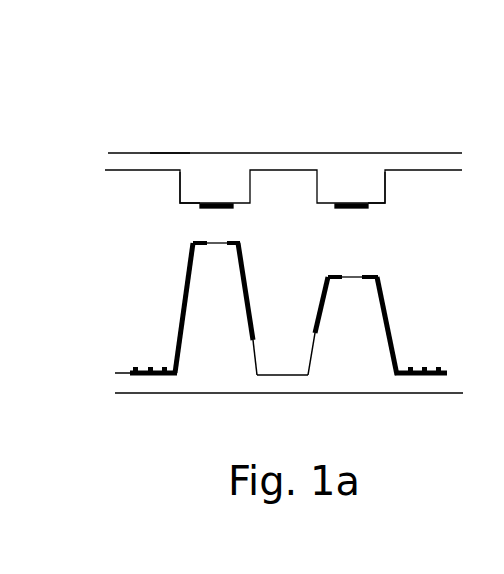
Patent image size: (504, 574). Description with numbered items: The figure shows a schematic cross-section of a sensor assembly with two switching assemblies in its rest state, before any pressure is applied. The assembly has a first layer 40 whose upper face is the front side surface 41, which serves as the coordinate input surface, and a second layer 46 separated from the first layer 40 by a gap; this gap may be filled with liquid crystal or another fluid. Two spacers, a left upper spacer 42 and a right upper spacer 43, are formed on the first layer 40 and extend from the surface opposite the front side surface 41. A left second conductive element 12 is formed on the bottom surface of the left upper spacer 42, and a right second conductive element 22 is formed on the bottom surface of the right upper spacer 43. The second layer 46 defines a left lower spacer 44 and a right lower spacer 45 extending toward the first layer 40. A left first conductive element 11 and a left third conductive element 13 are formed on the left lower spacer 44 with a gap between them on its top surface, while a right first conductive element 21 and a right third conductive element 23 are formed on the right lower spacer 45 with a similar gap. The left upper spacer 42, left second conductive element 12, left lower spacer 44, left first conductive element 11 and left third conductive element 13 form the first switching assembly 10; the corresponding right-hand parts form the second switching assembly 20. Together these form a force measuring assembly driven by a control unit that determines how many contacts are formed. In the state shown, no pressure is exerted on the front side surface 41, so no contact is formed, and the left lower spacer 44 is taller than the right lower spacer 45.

The first layer 40 is at (147, 162).
The front side surface 41 is at (170, 153).
The first switching assembly 10 is at (220, 143).
The second switching assembly 20 is at (355, 145).
The left upper spacer 42 is at (207, 180).
The right upper spacer 43 is at (370, 178).
The left second conductive element 12 is at (200, 209).
The right second conductive element 22 is at (362, 208).
The left first conductive element 11 is at (183, 300).
The left third conductive element 13 is at (250, 295).
The right third conductive element 23 is at (322, 300).
The right first conductive element 21 is at (383, 302).
The left lower spacer 44 is at (197, 337).
The right lower spacer 45 is at (370, 338).
The second layer 46 is at (175, 392).